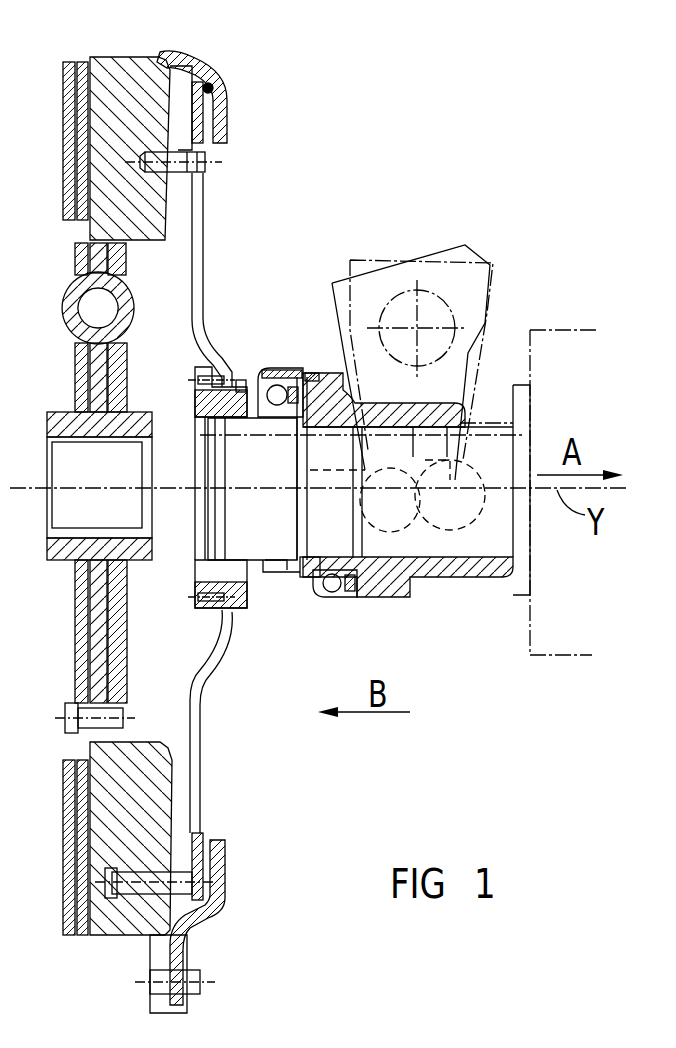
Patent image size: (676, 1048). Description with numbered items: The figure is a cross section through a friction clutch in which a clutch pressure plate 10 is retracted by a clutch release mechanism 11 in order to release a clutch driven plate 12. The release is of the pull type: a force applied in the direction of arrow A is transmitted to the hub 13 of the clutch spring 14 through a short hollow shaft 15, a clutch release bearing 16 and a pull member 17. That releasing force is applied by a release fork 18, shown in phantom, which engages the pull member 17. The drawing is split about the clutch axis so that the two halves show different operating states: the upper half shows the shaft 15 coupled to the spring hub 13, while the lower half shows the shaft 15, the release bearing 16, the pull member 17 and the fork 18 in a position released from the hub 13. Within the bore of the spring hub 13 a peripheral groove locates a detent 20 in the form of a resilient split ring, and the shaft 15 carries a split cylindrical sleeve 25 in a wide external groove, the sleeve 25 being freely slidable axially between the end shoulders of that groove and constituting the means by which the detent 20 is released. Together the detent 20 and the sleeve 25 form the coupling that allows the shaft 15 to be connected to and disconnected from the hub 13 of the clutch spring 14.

The clutch pressure plate 10 is at (150, 223).
The clutch release mechanism 11 is at (298, 362).
The clutch driven plate 12 is at (90, 772).
The hub 13 is at (250, 580).
The clutch spring 14 is at (193, 731).
The short hollow shaft 15 is at (280, 385).
The clutch release bearing 16 is at (332, 592).
The pull member 17 is at (410, 578).
The release fork 18 is at (462, 332).
The detent 20 is at (257, 468).
The split cylindrical sleeve 25 is at (246, 372).